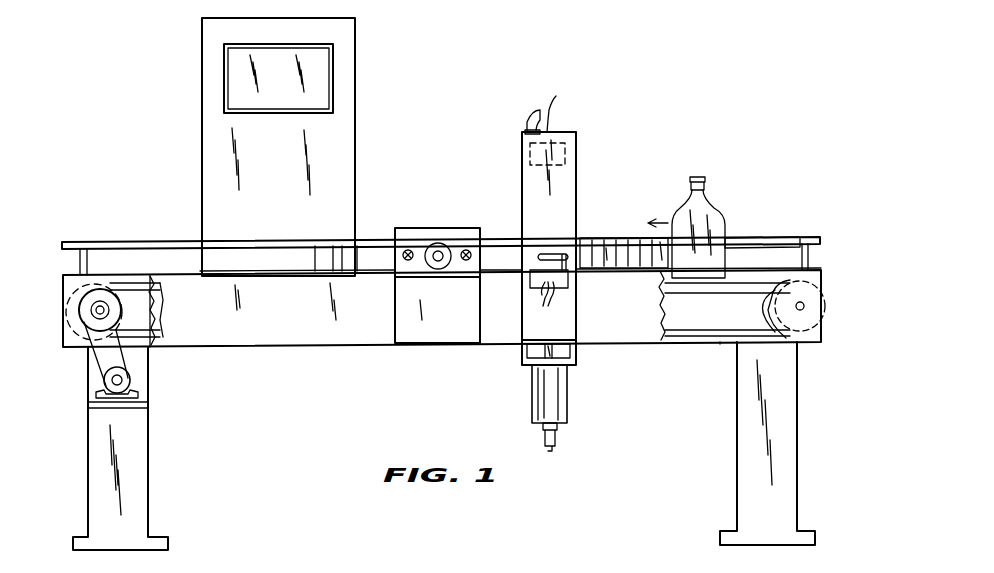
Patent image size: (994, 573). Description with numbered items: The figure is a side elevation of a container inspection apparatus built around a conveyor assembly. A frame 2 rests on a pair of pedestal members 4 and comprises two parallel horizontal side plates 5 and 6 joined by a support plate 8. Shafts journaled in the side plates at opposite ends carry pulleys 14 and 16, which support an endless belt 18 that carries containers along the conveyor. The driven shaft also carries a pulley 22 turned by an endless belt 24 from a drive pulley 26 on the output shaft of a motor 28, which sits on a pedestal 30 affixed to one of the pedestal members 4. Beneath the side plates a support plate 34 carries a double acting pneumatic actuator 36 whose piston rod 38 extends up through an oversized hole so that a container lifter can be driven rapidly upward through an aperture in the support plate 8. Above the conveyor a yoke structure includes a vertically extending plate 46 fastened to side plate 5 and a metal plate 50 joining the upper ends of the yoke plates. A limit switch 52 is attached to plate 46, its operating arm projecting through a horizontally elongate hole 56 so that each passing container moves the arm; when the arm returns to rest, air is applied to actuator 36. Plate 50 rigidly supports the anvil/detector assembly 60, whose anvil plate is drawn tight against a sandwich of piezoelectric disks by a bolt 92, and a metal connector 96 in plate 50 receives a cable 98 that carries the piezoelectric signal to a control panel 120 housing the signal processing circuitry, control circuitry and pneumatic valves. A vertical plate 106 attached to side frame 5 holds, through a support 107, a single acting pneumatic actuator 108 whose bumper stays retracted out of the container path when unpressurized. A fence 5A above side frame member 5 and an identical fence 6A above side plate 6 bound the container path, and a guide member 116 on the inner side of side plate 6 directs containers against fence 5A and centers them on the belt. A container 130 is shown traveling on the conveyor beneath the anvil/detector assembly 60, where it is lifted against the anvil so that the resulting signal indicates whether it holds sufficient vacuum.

The frame 2 is at (312, 348).
The pedestal members 4 is at (135, 470).
The side plate 5 is at (282, 312).
The fence 5A is at (372, 242).
The side plate 6 is at (140, 316).
The second fence 6A is at (762, 238).
The support plate 8 is at (150, 303).
The pulley 14 is at (770, 300).
The pulley 16 is at (68, 310).
The endless belt 18 is at (724, 346).
The pulley 22 is at (93, 292).
The endless belt 24 is at (98, 356).
The drive pulley 26 is at (108, 386).
The motor 28 is at (134, 368).
The pedestal 30 is at (140, 410).
The support plate 34 is at (522, 360).
The double acting pneumatic actuator 36 is at (555, 398).
The piston rod 38 is at (552, 352).
The vertically extending plate 46 is at (580, 200).
The metal plate 50 is at (580, 134).
The limit switch 52 is at (562, 285).
The horizontally elongate hole 56 is at (540, 256).
The anvil/detector assembly 60 is at (577, 158).
The bolt 92 is at (548, 118).
The metal connector 96 is at (525, 131).
The cable 98 is at (527, 115).
The vertical plate 106 is at (458, 318).
The support 107 is at (405, 272).
The single acting pneumatic actuator 108 is at (437, 243).
The guide member 116 is at (632, 248).
The control panel 120 is at (366, 70).
The bottle 130 is at (712, 214).